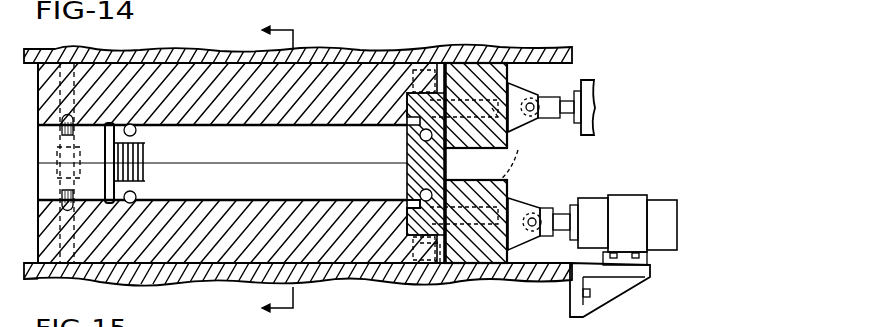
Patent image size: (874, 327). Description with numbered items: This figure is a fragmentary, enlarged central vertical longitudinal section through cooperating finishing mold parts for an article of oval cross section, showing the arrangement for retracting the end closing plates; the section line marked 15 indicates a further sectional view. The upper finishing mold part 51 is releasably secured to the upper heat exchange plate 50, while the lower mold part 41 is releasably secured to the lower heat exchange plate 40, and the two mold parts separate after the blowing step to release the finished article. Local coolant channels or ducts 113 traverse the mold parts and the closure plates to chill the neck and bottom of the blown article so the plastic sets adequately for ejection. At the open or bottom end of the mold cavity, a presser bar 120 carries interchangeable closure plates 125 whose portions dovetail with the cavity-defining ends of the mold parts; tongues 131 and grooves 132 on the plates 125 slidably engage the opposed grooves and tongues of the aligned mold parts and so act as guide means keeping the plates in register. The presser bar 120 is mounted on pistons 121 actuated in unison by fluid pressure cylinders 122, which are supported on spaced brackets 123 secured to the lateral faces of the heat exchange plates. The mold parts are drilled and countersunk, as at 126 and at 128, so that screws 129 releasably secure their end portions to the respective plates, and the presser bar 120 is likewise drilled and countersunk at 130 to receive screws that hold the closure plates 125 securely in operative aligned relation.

The section line 15- 15 is at (290, 171).
The heat exchange plate 40 is at (513, 292).
The lower mold part 41 is at (205, 250).
The heat exchange plate 50 is at (361, 60).
The upper finishing mold part 51 is at (213, 70).
The coolant channels or ducts 113 is at (136, 130).
The presser bar 120 is at (486, 72).
The pistons 121 is at (566, 104).
The cylinders 122 is at (594, 112).
The brackets 123 is at (607, 290).
The closure plates 125 is at (412, 158).
The drilled and countersunk holes 126 is at (99, 54).
The drilled and countersunk holes 128 is at (418, 62).
The screws 129 is at (430, 285).
The drilled and countersunk hole 130 is at (512, 142).
The tongues 131 is at (412, 214).
The grooves 132 is at (411, 203).